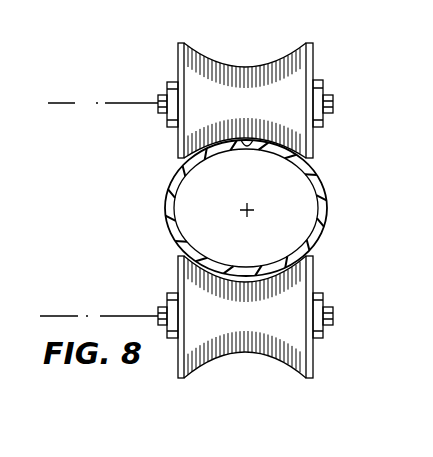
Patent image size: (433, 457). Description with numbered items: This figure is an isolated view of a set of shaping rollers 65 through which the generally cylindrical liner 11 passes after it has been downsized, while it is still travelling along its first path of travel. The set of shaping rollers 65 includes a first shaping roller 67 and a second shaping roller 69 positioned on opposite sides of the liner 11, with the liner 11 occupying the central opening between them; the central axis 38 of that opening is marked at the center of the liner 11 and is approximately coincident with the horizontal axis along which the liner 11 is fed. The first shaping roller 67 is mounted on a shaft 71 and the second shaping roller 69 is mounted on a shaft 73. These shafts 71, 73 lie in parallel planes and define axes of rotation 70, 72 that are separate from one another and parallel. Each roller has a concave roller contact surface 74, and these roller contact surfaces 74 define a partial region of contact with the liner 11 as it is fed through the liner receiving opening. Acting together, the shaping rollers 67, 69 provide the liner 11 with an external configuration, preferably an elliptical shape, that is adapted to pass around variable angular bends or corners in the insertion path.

The liner 11 is at (319, 190).
The central axis 38 is at (243, 210).
The shaping rollers 65 is at (352, 120).
The first shaping roller 67 is at (180, 135).
The second shaping roller 69 is at (180, 268).
The axis of rotation 70 is at (77, 103).
The shaft 71 is at (333, 104).
The axis of rotation 72 is at (108, 315).
The shaft 73 is at (333, 311).
The roller contact surfaces 74 is at (249, 146).